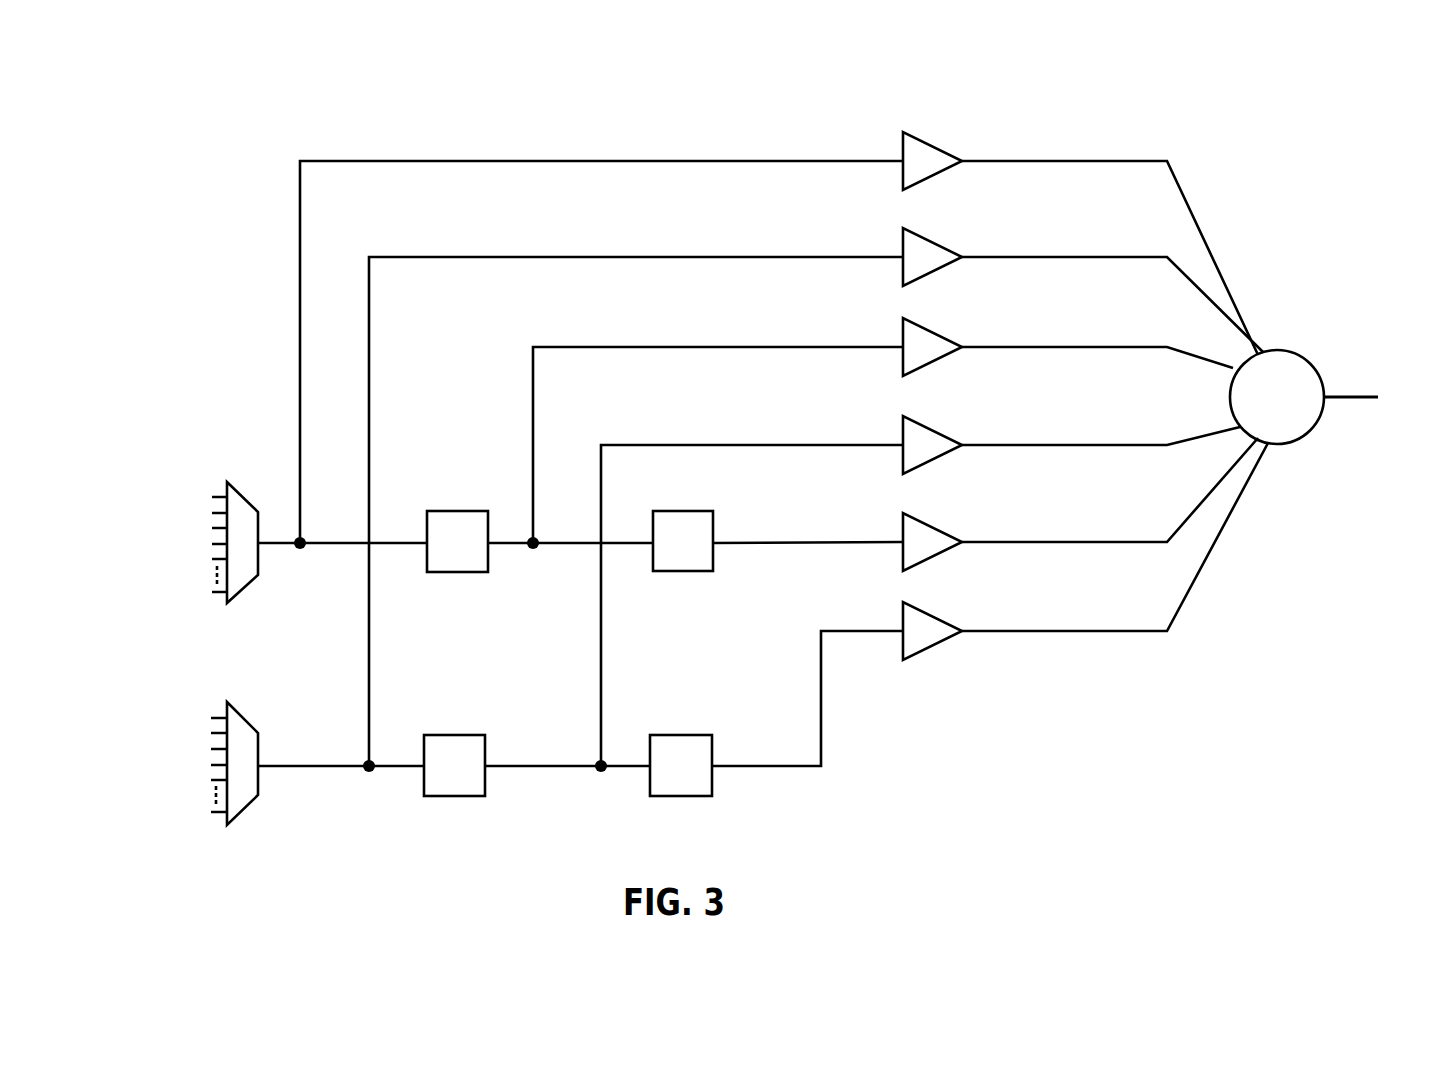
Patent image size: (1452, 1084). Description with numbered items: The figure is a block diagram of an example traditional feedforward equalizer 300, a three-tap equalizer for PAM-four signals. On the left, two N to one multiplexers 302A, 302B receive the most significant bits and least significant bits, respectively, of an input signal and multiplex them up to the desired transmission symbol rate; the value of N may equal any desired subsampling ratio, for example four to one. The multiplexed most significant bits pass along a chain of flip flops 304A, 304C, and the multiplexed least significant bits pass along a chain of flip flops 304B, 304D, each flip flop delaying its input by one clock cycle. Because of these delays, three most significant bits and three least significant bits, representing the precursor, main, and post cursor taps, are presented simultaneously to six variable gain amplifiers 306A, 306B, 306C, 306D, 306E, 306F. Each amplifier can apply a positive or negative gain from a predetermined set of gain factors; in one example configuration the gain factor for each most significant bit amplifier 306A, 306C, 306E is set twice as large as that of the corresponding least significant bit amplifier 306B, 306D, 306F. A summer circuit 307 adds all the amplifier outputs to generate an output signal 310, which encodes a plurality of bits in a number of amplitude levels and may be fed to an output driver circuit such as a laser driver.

The traditional feedforward equalizer 300 is at (212, 146).
The multiplexer 302A is at (238, 490).
The multiplexer 302B is at (250, 717).
The flip flop 304A is at (468, 507).
The flip flop 304B is at (483, 730).
The flip flop 304C is at (707, 507).
The flip flop 304D is at (693, 730).
The variable gain amplifier 306A is at (918, 132).
The variable gain amplifier 306B is at (918, 228).
The variable gain amplifier 306C is at (923, 322).
The variable gain amplifier 306D is at (917, 418).
The variable gain amplifier 306E is at (922, 513).
The variable gain amplifier 306F is at (917, 600).
The summer circuit 307 is at (1292, 350).
The output signal 310 is at (1368, 407).